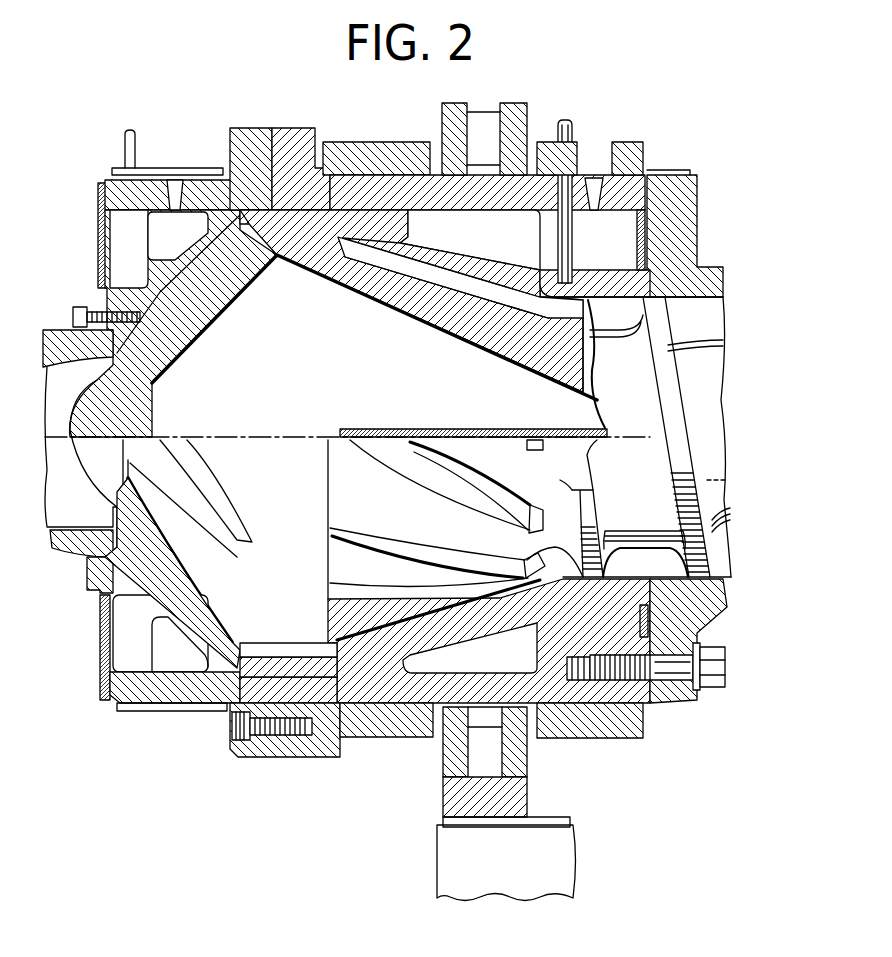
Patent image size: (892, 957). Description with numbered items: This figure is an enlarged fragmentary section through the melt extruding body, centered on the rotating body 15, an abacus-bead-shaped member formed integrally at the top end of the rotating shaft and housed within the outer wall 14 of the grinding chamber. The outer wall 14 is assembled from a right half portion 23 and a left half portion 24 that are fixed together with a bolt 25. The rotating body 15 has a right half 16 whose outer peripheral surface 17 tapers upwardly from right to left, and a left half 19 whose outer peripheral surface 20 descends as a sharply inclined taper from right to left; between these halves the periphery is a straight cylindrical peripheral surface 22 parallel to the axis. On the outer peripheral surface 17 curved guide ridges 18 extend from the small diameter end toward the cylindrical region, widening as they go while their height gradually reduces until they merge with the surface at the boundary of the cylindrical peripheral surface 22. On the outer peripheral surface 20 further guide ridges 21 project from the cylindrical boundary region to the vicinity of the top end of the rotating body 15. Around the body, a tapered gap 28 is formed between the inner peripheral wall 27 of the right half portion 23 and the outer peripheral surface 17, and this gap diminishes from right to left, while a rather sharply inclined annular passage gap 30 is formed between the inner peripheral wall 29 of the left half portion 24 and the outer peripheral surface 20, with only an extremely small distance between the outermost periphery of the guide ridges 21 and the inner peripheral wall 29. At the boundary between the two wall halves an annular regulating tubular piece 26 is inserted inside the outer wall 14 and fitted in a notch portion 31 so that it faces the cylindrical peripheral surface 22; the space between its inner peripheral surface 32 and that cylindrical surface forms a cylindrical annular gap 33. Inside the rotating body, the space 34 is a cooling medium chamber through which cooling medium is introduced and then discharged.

The outer wall of the grinding chamber 14 is at (298, 125).
The rotating body 15 is at (226, 222).
The right half of the rotating body 16 is at (360, 263).
The outer peripheral surface of the right half 17 is at (490, 300).
The guide ridges 18 is at (523, 307).
The left half of the rotating body 19 is at (173, 342).
The outer peripheral surface of the left half 20 is at (182, 305).
The guide ridges 21 is at (182, 303).
The straight cylindrical peripheral surface 22 is at (327, 225).
The right half portion of the outer wall 23 is at (627, 187).
The left half portion of the outer wall 24 is at (258, 140).
The bolt 25 is at (233, 730).
The regulating tubular piece 26 is at (340, 712).
The inner peripheral wall of the right half portion 27 is at (423, 243).
The tapered gap 28 is at (457, 270).
The inner peripheral wall of the left half portion 29 is at (207, 265).
The annular passage gap 30 is at (157, 553).
The notch portion 31 is at (257, 657).
The inner peripheral surface of the regulating piece 32 is at (336, 670).
The cylindrical annular gap 33 is at (300, 645).
The cooling medium chamber 34 is at (341, 383).